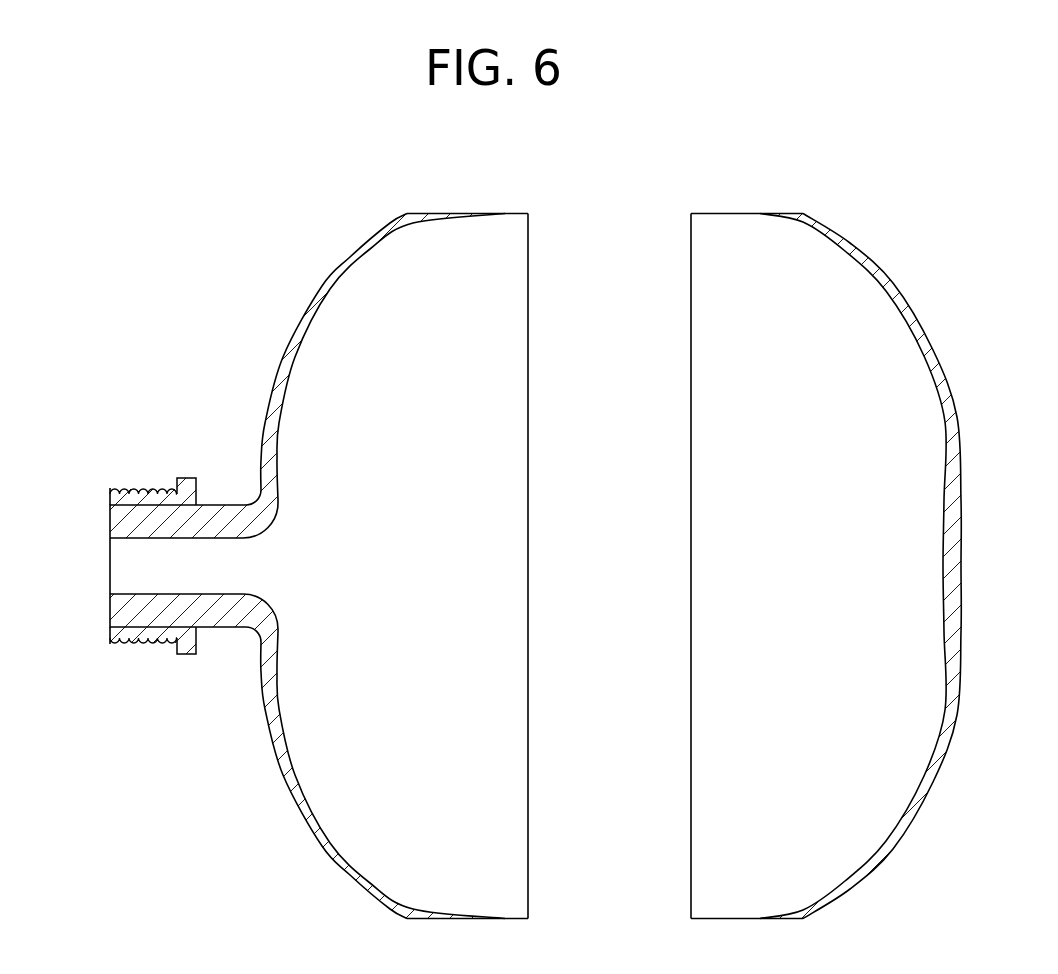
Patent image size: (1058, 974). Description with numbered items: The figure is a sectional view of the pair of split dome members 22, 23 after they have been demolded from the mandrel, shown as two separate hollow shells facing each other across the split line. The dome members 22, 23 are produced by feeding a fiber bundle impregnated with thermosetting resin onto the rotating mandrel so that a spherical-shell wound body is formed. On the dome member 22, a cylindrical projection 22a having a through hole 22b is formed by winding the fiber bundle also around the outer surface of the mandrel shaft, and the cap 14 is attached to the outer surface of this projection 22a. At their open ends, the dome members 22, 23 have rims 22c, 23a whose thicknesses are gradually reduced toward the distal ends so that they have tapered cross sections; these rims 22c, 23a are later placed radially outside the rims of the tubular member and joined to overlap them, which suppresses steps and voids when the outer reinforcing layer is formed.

The cap 14 is at (188, 478).
The dome member 22 is at (323, 287).
The cylindrical projection 22a is at (145, 527).
The through hole 22b is at (147, 570).
The rim 22c is at (440, 212).
The dome member 23 is at (895, 288).
The rim 23a is at (757, 212).